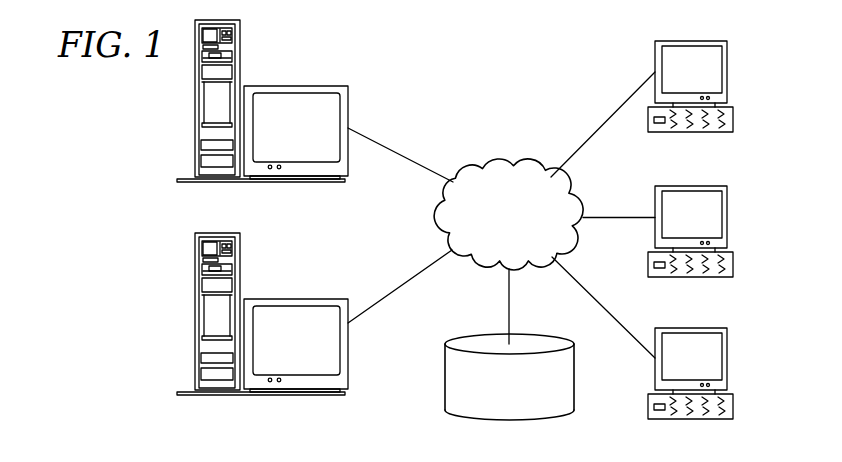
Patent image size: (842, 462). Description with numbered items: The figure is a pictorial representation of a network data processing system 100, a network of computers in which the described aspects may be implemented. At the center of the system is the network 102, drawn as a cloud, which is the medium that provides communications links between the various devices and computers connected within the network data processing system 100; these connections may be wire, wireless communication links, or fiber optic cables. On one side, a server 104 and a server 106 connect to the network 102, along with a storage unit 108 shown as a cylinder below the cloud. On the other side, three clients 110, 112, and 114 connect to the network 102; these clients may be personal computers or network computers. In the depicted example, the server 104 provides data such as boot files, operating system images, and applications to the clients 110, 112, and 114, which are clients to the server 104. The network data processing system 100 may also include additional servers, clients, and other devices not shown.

The network data processing system 100 is at (560, 73).
The network 102 is at (482, 167).
The server 104 is at (195, 133).
The server 106 is at (195, 316).
The storage unit 108 is at (444, 390).
The client 110 is at (728, 72).
The client 112 is at (728, 225).
The client 114 is at (728, 358).